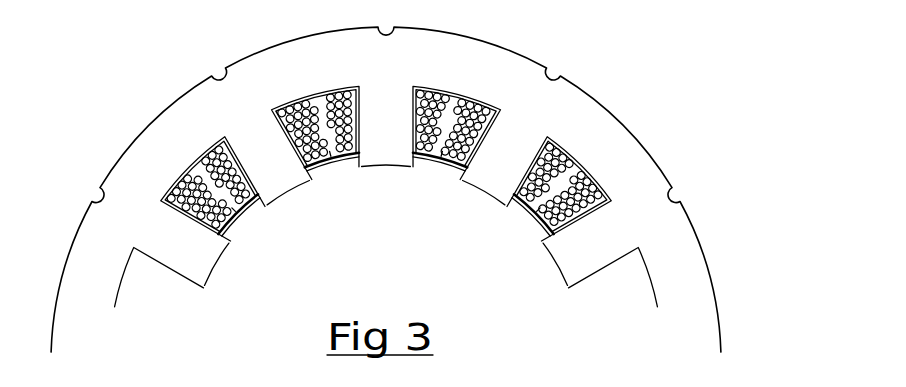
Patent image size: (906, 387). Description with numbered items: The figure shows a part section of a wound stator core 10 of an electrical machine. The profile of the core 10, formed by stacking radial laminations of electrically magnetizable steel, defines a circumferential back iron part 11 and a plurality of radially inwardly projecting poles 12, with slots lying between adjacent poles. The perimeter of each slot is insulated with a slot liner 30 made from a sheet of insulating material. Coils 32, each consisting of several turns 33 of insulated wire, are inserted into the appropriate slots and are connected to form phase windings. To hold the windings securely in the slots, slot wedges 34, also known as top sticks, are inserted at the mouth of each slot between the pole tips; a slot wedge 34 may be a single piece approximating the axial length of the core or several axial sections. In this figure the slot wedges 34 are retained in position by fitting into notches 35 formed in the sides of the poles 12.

The stator core 10 is at (672, 165).
The circumferential back iron part 11 is at (472, 60).
The radially inwardly projecting pole 12 is at (594, 274).
The slot liner 30 is at (573, 160).
The coil 32 is at (562, 190).
The turn 33 is at (555, 142).
The slot wedge 34 is at (530, 217).
The notch 35 is at (570, 285).